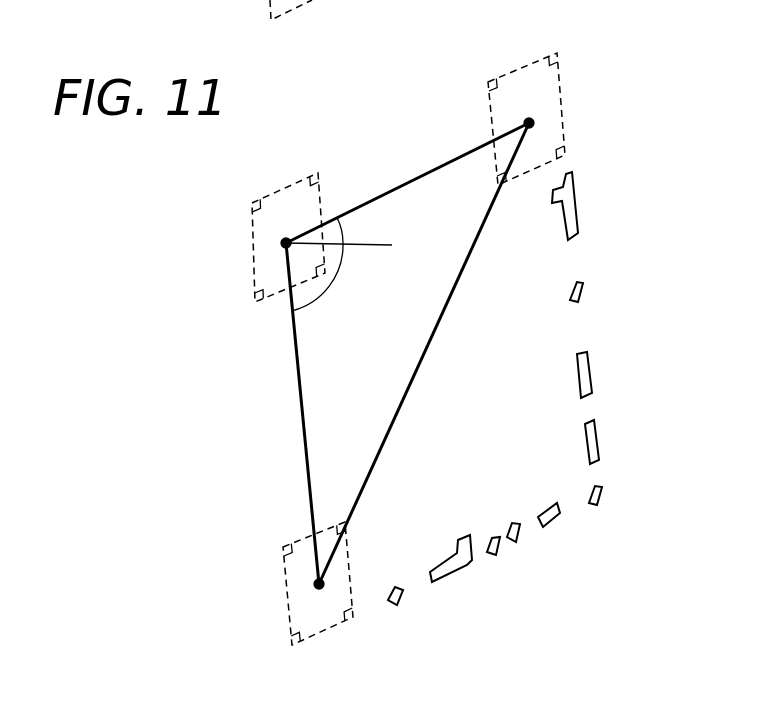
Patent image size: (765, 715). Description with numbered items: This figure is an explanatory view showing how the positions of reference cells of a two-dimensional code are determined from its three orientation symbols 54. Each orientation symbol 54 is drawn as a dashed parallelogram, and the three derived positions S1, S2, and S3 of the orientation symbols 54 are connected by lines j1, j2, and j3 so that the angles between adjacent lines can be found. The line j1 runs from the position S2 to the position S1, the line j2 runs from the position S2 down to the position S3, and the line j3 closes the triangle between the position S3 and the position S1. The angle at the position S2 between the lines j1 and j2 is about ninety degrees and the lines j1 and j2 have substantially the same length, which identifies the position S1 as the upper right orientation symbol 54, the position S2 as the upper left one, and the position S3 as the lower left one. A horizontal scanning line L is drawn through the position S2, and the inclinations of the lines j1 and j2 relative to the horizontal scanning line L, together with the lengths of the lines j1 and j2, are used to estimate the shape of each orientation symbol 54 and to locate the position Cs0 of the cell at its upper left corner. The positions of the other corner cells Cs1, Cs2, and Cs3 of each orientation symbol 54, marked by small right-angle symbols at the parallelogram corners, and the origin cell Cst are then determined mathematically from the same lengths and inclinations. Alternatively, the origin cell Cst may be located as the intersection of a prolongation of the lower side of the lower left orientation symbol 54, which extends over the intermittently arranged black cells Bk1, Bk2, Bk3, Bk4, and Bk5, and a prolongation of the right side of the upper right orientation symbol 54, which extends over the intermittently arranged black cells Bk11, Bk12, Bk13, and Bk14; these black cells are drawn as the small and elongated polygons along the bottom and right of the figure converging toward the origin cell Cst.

The orientation symbol 54 is at (278, 192).
The upper left corner cell position Cs0 is at (252, 203).
The corner cell Cs1 is at (255, 302).
The corner cell Cs2 is at (326, 274).
The corner cell Cs3 is at (318, 173).
The position S1 is at (530, 111).
The position S2 is at (276, 229).
The position S3 is at (316, 600).
The line j1 is at (403, 185).
The line j2 is at (301, 378).
The line j3 is at (408, 388).
The horizontal scanning line L is at (347, 248).
The black cell Bk11 is at (577, 204).
The black cell Bk12 is at (583, 287).
The black cell Bk13 is at (592, 370).
The black cell Bk14 is at (599, 440).
The origin cell Cst is at (602, 493).
The black cell Bk1 is at (402, 597).
The black cell Bk2 is at (448, 577).
The black cell Bk3 is at (497, 552).
The black cell Bk4 is at (518, 540).
The black cell Bk5 is at (557, 522).